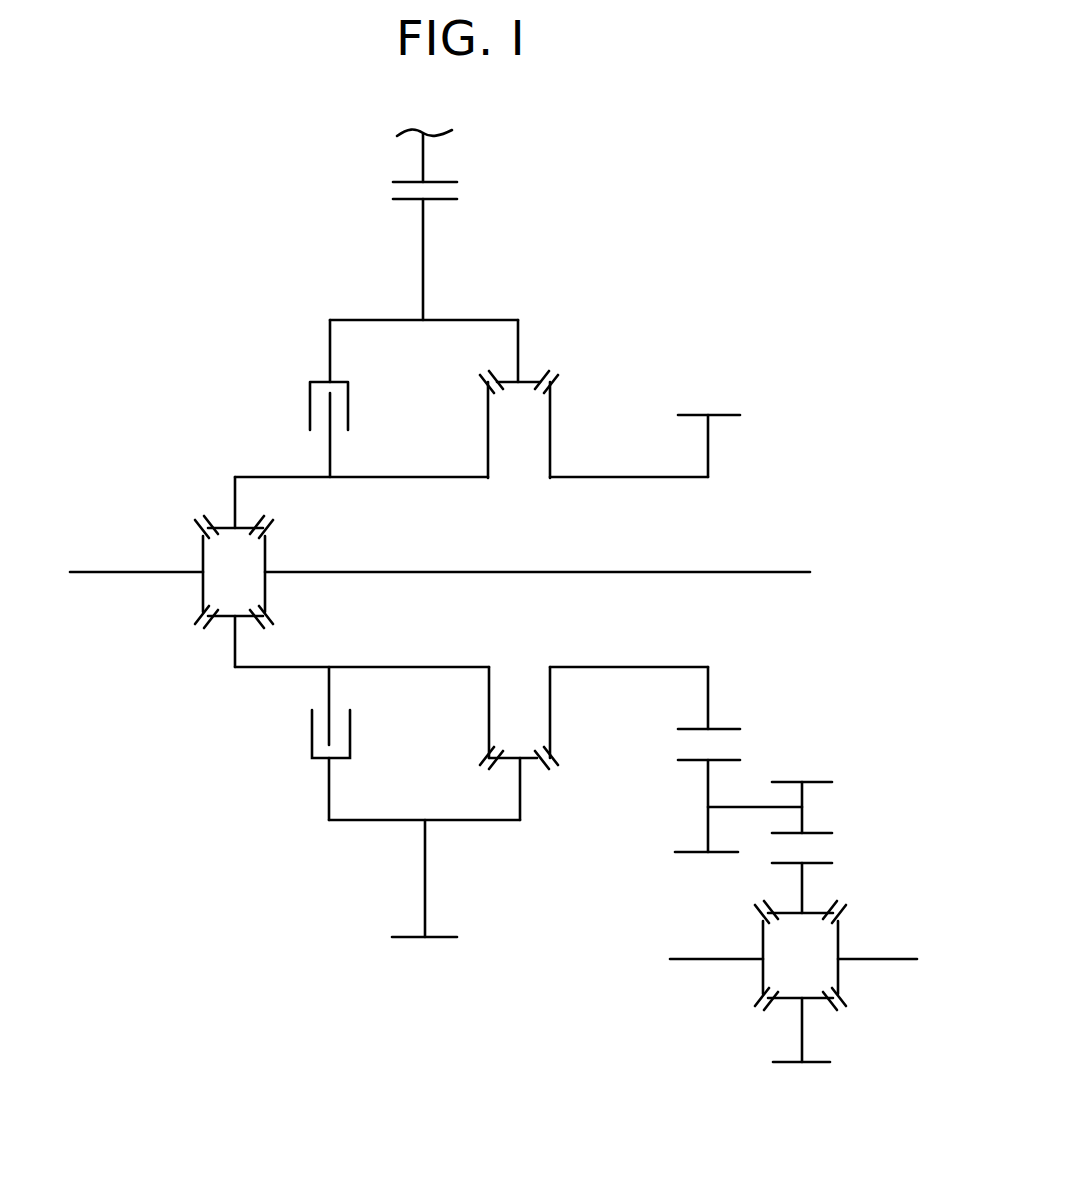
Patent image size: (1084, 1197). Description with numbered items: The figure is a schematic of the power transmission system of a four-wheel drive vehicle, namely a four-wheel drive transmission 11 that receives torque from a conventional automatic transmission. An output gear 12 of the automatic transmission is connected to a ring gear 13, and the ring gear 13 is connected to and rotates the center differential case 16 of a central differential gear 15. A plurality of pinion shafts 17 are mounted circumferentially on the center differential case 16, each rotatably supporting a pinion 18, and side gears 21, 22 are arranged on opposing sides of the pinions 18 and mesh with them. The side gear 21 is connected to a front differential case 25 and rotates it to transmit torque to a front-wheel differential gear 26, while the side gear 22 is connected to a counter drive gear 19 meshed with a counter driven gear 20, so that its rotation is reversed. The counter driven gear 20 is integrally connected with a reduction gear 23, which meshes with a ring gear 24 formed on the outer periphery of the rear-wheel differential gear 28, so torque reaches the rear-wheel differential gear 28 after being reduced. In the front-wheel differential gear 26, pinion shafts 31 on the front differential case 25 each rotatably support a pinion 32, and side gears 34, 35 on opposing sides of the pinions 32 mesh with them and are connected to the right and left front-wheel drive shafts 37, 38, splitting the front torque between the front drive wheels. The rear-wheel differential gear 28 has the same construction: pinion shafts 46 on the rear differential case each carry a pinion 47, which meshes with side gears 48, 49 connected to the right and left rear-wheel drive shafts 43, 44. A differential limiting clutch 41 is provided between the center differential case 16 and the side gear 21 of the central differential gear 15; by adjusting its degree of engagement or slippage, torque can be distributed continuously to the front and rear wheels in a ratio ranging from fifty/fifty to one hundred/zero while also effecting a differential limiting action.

The four-wheel drive transmission 11 is at (745, 183).
The output gear 12 is at (445, 182).
The ring gear 13 is at (450, 200).
The central differential gear 15 is at (592, 380).
The center differential case 16 is at (455, 318).
The pinion shaft 17 is at (518, 345).
The pinion 18 is at (490, 372).
The counter drive gear 19 is at (728, 407).
The counter driven gear 20 is at (697, 855).
The side gear 21 is at (497, 395).
The side gear 22 is at (541, 395).
The reduction gear 23 is at (817, 782).
The ring gear 24 is at (785, 1065).
The front differential case 25 is at (258, 477).
The front-wheel differential gear 26 is at (153, 535).
The rear-wheel differential gear 28 is at (700, 1033).
The pinion shaft 31 is at (237, 505).
The pinion 32 is at (205, 520).
The side gear 34 is at (197, 612).
The side gear 35 is at (268, 612).
The front-wheel drive shaft 37 is at (97, 575).
The front-wheel drive shaft 38 is at (740, 575).
The differential limiting clutch 41 is at (308, 358).
The rear-wheel drive shaft 43 is at (697, 962).
The rear-wheel drive shaft 44 is at (900, 965).
The pinion shaft 46 is at (805, 885).
The pinion 47 is at (775, 900).
The side gear 48 is at (757, 1000).
The side gear 49 is at (840, 1000).